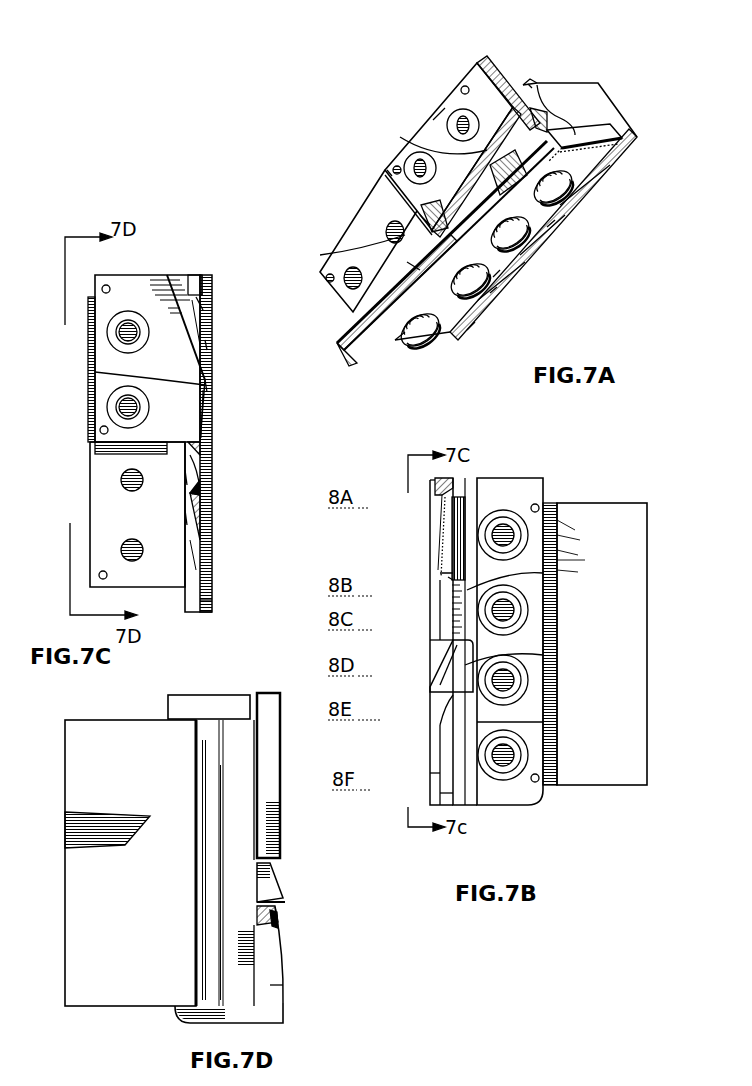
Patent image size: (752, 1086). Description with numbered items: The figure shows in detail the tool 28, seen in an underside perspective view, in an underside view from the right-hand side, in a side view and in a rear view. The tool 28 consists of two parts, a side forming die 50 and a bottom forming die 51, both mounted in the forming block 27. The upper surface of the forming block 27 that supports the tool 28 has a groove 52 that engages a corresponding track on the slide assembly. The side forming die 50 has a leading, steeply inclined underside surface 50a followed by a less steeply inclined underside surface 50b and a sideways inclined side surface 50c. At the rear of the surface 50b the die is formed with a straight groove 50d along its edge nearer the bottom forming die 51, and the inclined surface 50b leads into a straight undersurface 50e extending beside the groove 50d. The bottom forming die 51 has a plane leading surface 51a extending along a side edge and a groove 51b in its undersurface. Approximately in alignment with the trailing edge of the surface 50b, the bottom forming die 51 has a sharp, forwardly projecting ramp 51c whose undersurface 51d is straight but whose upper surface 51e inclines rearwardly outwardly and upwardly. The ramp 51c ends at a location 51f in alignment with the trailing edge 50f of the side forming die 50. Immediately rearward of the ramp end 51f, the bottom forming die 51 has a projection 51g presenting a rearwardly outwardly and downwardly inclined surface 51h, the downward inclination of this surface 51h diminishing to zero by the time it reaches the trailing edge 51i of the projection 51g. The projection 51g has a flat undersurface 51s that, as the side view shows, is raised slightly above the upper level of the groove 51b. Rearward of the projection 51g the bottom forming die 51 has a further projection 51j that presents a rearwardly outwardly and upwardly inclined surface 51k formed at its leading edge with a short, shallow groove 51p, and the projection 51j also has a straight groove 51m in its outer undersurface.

In FIG. 7A, the forming block 27 is at (560, 93).
In FIG. 7B, the forming block 27 is at (593, 777).
In FIG. 7D, the forming block 27 is at (110, 737).
In FIG. 7A, the tool 28 is at (497, 73).
In FIG. 7A, the side forming die 50 is at (437, 127).
In FIG. 7C, the side forming die 50 is at (157, 325).
In FIG. 7B, the side forming die 50 is at (504, 615).
In FIG. 7D, the side forming die 50 is at (270, 710).
In FIG. 7A, the leading steeply inclined underside surface 50a is at (500, 130).
In FIG. 7C, the leading steeply inclined underside surface 50a is at (188, 298).
In FIG. 7B, the leading steeply inclined underside surface 50a is at (452, 478).
In FIG. 7A, the less steeply inclined underside surface 50b is at (605, 168).
In FIG. 7C, the less steeply inclined underside surface 50b is at (212, 315).
In FIG. 7B, the less steeply inclined underside surface 50b is at (433, 512).
In FIG. 7A, the sideways inclined side surface 50c is at (500, 100).
In FIG. 7C, the sideways inclined side surface 50c is at (210, 296).
In FIG. 7B, the sideways inclined side surface 50c is at (435, 500).
In FIG. 7A, the straight groove 50d is at (563, 217).
In FIG. 7B, the straight groove 50d is at (448, 562).
In FIG. 7A, the straight undersurface 50e is at (420, 222).
In FIG. 7C, the straight undersurface 50e is at (95, 378).
In FIG. 7B, the straight undersurface 50e is at (438, 575).
In FIG. 7A, the trailing edge 50f is at (387, 170).
In FIG. 7C, the trailing edge 50f is at (92, 452).
In FIG. 7B, the trailing edge 50f is at (435, 642).
In FIG. 7A, the bottom forming die 51 is at (520, 253).
In FIG. 7C, the bottom forming die 51 is at (188, 568).
In FIG. 7B, the bottom forming die 51 is at (453, 641).
In FIG. 7D, the bottom forming die 51 is at (217, 707).
In FIG. 7A, the plane leading surface 51a is at (577, 130).
In FIG. 7C, the plane leading surface 51a is at (210, 281).
In FIG. 7B, the plane leading surface 51a is at (430, 492).
In FIG. 7A, the groove 51b is at (618, 133).
In FIG. 7B, the groove 51b is at (548, 580).
In FIG. 7A, the ramp 51c is at (397, 195).
In FIG. 7C, the ramp 51c is at (207, 365).
In FIG. 7B, the ramp 51c is at (450, 580).
In FIG. 7A, the ramp undersurface 51d is at (547, 227).
In FIG. 7C, the ramp undersurface 51d is at (212, 385).
In FIG. 7A, the ramp upper surface 51e is at (433, 120).
In FIG. 7C, the ramp upper surface 51e is at (217, 342).
In FIG. 7A, the ramp end location 51f is at (400, 263).
In FIG. 7C, the ramp end location 51f is at (210, 420).
In FIG. 7B, the ramp end location 51f is at (447, 643).
In FIG. 7A, the projection 51g is at (420, 215).
In FIG. 7C, the projection 51g is at (187, 477).
In FIG. 7B, the projection 51g is at (545, 662).
In FIG. 7D, the projection 51g is at (275, 895).
In FIG. 7A, the rearwardly outwardly and downwardly inclined surface 51h is at (490, 293).
In FIG. 7C, the rearwardly outwardly and downwardly inclined surface 51h is at (217, 453).
In FIG. 7B, the rearwardly outwardly and downwardly inclined surface 51h is at (435, 668).
In FIG. 7D, the rearwardly outwardly and downwardly inclined surface 51h is at (270, 893).
In FIG. 7A, the trailing edge of projection 51i is at (407, 262).
In FIG. 7C, the trailing edge of projection 51i is at (207, 487).
In FIG. 7B, the trailing edge of projection 51i is at (437, 695).
In FIG. 7D, the trailing edge of projection 51i is at (277, 910).
In FIG. 7A, the further projection 51j is at (393, 337).
In FIG. 7C, the further projection 51j is at (207, 573).
In FIG. 7B, the further projection 51j is at (445, 793).
In FIG. 7D, the further projection 51j is at (270, 985).
In FIG. 7A, the rearwardly outwardly and upwardly inclined surface 51k is at (357, 323).
In FIG. 7C, the rearwardly outwardly and upwardly inclined surface 51k is at (187, 517).
In FIG. 7B, the rearwardly outwardly and upwardly inclined surface 51k is at (435, 727).
In FIG. 7D, the rearwardly outwardly and upwardly inclined surface 51k is at (281, 948).
In FIG. 7A, the straight groove 51m is at (350, 357).
In FIG. 7C, the straight groove 51m is at (207, 603).
In FIG. 7B, the straight groove 51m is at (433, 773).
In FIG. 7A, the short shallow groove 51p is at (467, 330).
In FIG. 7C, the short shallow groove 51p is at (210, 512).
In FIG. 7D, the short shallow groove 51p is at (280, 917).
In FIG. 7A, the flat undersurface 51s is at (493, 277).
In FIG. 7C, the flat undersurface 51s is at (210, 472).
In FIG. 7A, the groove 52 is at (527, 83).
In FIG. 7D, the groove 52 is at (197, 772).